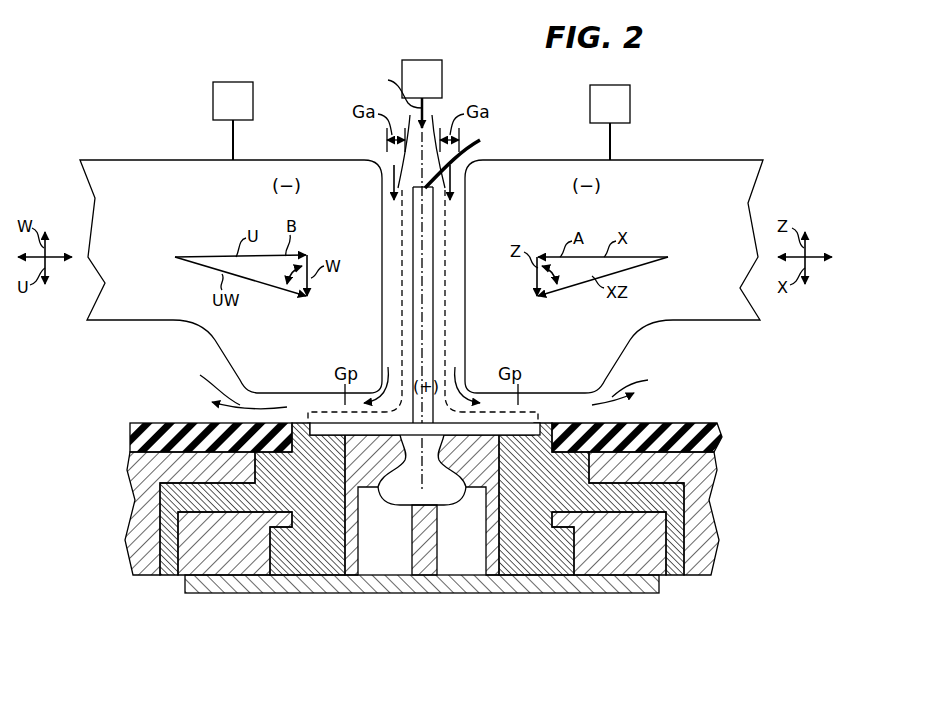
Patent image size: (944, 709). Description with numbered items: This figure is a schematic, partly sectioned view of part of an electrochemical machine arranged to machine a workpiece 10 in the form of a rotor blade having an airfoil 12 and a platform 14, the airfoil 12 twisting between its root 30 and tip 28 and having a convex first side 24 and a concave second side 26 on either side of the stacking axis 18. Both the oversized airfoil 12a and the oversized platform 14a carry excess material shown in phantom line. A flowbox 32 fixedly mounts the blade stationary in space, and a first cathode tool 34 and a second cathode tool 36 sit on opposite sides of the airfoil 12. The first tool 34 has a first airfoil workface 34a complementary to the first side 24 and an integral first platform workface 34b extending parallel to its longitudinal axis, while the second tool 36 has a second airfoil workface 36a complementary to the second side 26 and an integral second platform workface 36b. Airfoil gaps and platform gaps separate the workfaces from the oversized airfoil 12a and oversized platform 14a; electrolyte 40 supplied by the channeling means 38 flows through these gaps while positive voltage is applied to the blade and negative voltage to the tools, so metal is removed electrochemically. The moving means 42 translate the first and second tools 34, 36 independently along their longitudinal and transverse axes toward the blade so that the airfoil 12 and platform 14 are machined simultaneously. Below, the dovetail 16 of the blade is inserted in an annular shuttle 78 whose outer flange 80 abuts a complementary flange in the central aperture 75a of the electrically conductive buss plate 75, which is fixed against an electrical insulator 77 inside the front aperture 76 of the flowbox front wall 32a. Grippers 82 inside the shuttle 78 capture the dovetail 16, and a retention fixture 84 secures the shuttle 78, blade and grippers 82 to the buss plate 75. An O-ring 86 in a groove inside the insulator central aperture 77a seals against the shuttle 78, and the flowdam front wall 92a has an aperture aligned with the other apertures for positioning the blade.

The workpiece 10 is at (470, 156).
The airfoil 12 is at (413, 320).
The oversized airfoil 12a is at (445, 340).
The platform 14 is at (558, 430).
The oversized platform 14a is at (538, 412).
The dovetail 16 is at (455, 492).
The stacking axis 18 is at (434, 300).
The first side 24 is at (434, 272).
The second side 26 is at (413, 294).
The tip 28 is at (420, 187).
The root 30 is at (381, 505).
The flowbox 32 is at (728, 462).
The front wall 32a is at (718, 545).
The first cathode tool 34 is at (706, 160).
The first airfoil workface 34a is at (466, 245).
The first platform workface 34b is at (566, 395).
The second cathode tool 36 is at (148, 160).
The second airfoil workface 36a is at (384, 245).
The second platform workface 36b is at (302, 398).
The electrolyte channeling means 38 is at (422, 94).
The electrolyte 40 is at (425, 238).
The moving means 42 is at (421, 121).
The buss plate 75 is at (628, 545).
The central aperture of buss plate 75a is at (575, 545).
The front aperture 76 is at (150, 558).
The electrical insulator 77 is at (678, 560).
The central aperture of insulator 77a is at (520, 560).
The shuttle 78 is at (330, 555).
The outer flange 80 is at (280, 550).
The grippers 82 is at (372, 560).
The retention fixture 84 is at (516, 582).
The O-ring 86 is at (295, 465).
The flowdam front wall 92a is at (150, 423).